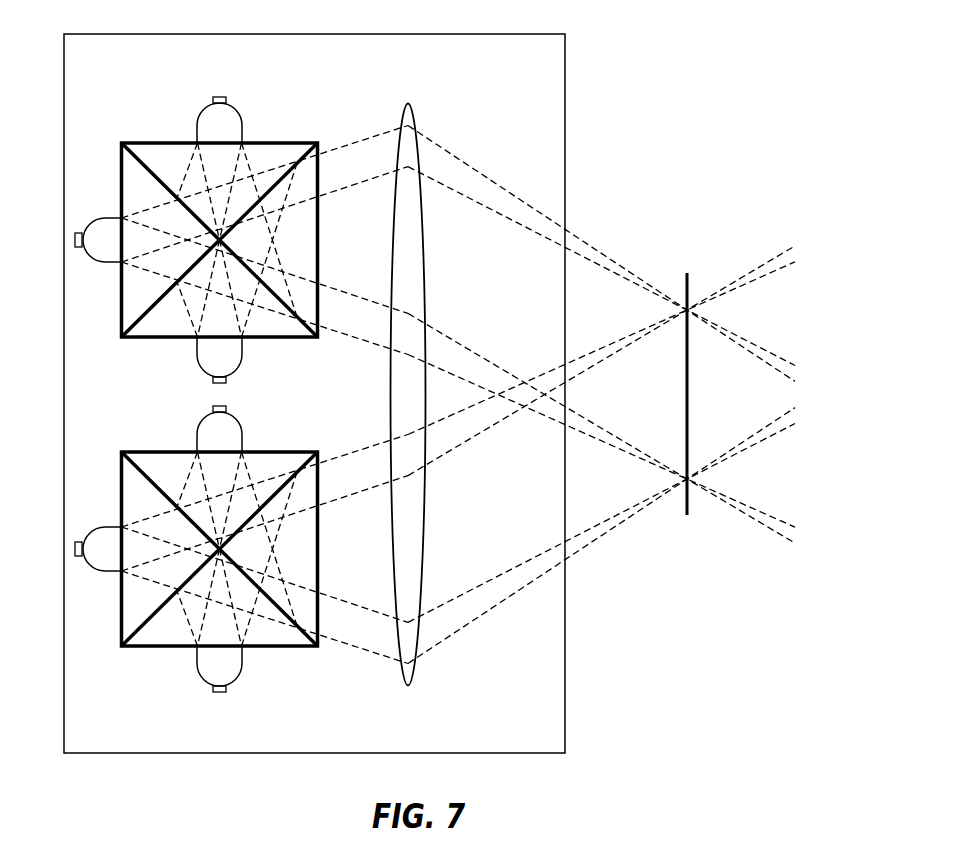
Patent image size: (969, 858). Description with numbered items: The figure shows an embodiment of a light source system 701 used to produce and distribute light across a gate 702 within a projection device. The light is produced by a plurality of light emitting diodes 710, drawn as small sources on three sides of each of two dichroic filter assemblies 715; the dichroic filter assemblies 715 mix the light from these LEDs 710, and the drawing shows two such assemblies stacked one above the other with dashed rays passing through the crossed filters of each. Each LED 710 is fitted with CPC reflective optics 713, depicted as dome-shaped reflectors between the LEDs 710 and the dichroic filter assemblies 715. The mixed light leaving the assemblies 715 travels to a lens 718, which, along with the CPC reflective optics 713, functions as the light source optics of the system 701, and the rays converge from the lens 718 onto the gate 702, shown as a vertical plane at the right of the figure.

The light source system 701 is at (316, 34).
The gate 702 is at (688, 394).
The light emitting diodes 710 is at (75, 240).
The CPC reflective optics 713 is at (101, 218).
The dichroic filter assemblies 715 is at (183, 143).
The lens 718 is at (412, 117).